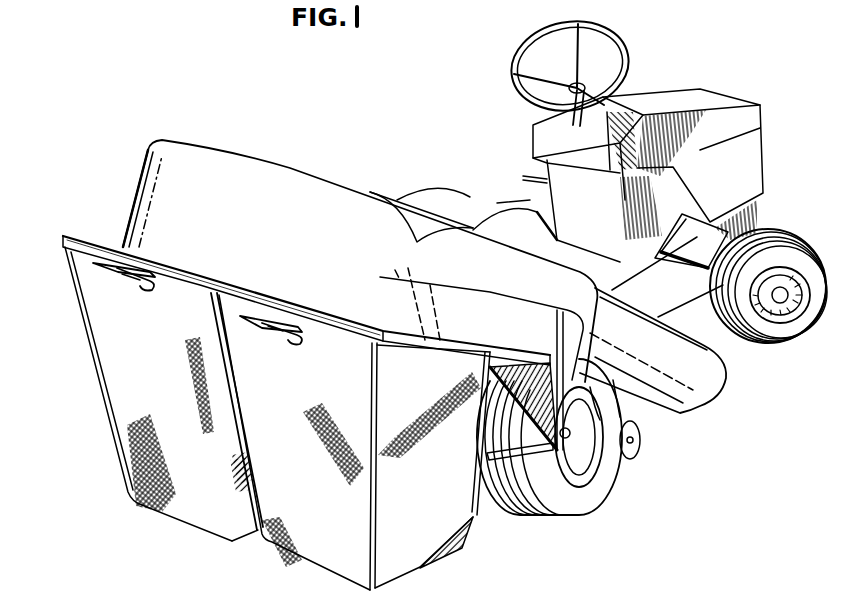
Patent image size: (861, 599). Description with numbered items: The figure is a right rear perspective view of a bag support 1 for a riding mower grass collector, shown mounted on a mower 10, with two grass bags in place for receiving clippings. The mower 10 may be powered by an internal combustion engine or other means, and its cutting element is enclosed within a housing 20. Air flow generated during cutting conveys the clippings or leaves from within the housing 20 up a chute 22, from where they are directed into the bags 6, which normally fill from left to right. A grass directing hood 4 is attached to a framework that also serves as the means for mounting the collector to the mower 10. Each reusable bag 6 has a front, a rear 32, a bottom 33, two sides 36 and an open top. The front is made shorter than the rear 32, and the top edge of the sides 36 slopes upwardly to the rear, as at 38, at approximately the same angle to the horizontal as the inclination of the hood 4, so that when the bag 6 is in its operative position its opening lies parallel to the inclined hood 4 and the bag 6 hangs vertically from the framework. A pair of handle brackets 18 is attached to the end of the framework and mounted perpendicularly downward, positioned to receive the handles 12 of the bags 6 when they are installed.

The bag support 1 is at (88, 463).
The grass directing hood 4 is at (233, 152).
The bag 6 is at (112, 413).
The mower 10 is at (716, 431).
The handles 12 is at (124, 281).
The handle brackets 18 is at (148, 285).
The housing 20 is at (659, 410).
The chute 22 is at (697, 333).
The rear 32 is at (312, 497).
The bottom 33 is at (440, 560).
The sides 36 is at (446, 487).
The sloping top edge of sides 38 is at (403, 347).